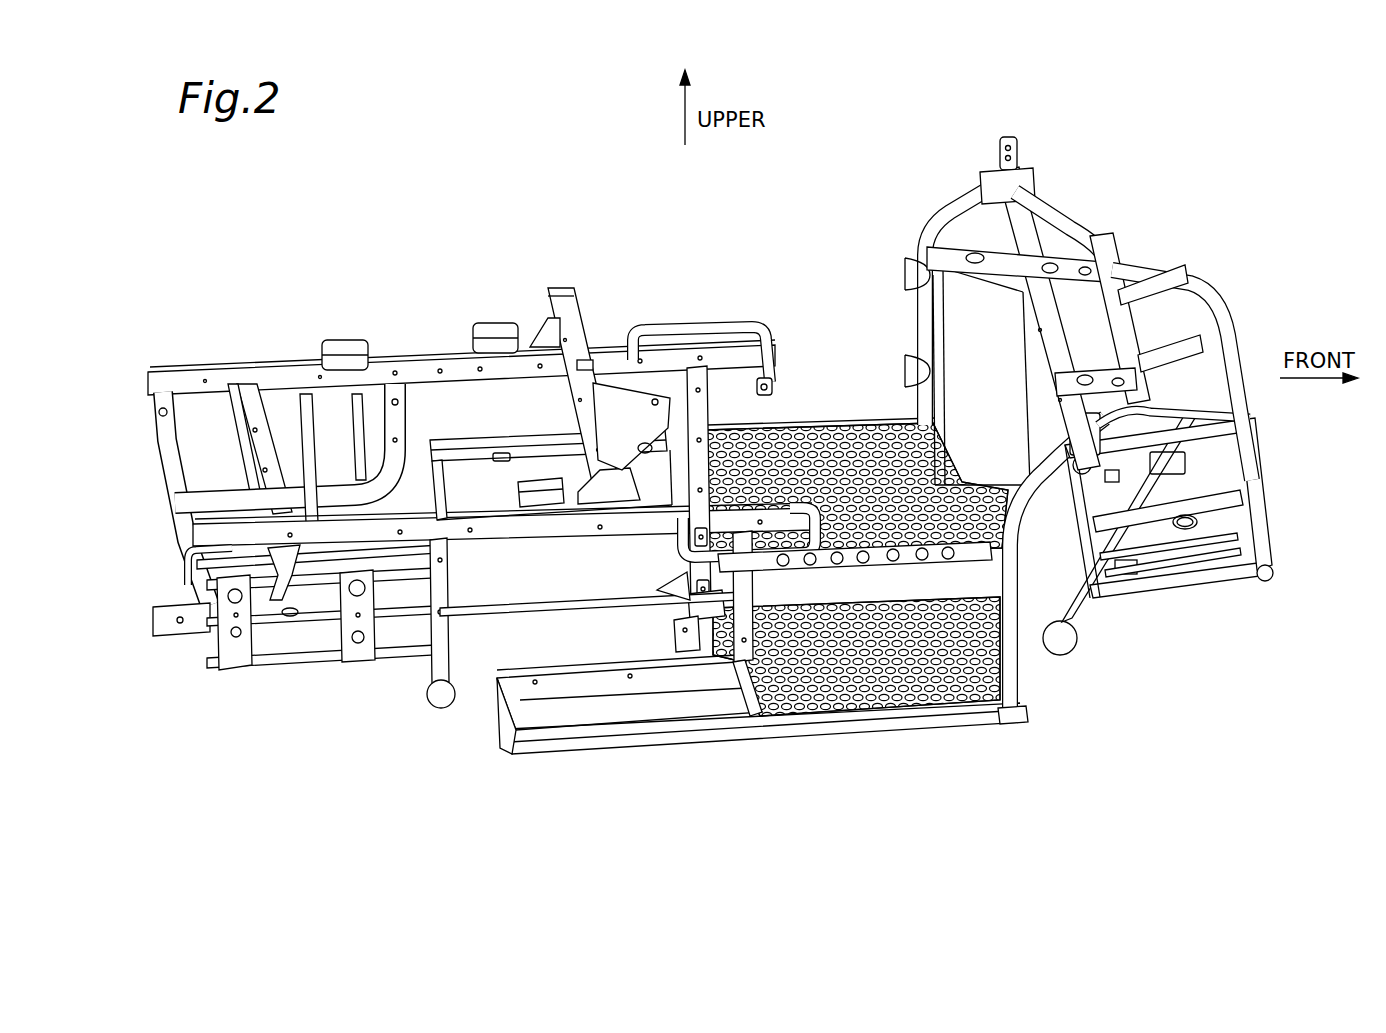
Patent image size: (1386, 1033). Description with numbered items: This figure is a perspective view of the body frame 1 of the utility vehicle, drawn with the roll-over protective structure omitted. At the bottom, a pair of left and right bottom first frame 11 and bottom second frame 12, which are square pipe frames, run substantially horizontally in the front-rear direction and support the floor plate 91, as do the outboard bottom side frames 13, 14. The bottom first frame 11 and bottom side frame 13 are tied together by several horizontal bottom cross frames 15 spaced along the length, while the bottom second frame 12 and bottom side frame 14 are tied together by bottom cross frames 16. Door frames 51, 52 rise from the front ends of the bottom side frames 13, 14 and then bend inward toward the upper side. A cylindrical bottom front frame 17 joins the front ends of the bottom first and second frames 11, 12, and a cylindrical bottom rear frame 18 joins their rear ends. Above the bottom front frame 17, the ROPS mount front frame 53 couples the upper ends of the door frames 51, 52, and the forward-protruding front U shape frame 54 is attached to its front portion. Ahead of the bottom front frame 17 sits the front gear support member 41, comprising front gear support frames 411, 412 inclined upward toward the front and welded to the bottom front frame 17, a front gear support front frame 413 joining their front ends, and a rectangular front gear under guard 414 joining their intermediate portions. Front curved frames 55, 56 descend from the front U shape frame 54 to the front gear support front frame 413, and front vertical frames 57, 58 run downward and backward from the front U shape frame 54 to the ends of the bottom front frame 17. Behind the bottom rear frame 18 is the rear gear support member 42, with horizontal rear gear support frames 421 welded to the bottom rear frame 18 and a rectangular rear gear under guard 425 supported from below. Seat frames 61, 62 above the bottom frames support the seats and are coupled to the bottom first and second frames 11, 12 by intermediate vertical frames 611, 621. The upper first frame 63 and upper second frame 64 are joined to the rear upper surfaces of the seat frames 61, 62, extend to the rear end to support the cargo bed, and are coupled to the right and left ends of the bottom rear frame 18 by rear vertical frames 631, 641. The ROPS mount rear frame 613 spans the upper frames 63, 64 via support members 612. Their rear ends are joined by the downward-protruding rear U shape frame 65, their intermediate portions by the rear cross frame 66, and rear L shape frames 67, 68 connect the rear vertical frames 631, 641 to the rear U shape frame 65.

The body frame 1 is at (1162, 168).
The bottom first frame 11 is at (590, 685).
The bottom second frame 12 is at (663, 397).
The bottom side frame 13 is at (700, 737).
The bottom side frame 14 is at (473, 457).
The bottom cross frame 15 is at (515, 742).
The bottom cross frame 16 is at (430, 437).
The bottom front frame 17 is at (1065, 655).
The bottom rear frame 18 is at (447, 710).
The front gear support member 41 is at (1232, 620).
The front gear support frame 411 is at (1194, 583).
The front gear support frame 412 is at (1122, 577).
The front gear support front frame 413 is at (1265, 592).
The front gear under guard 414 is at (1157, 573).
The rear gear support member 42 is at (262, 690).
The rear gear support frame 421 is at (305, 647).
The rear gear under guard 425 is at (322, 615).
The door frame 51 is at (1018, 668).
The door frame 52 is at (925, 240).
The ROPS mount front frame 53 is at (1015, 205).
The front U shape frame 54 is at (1088, 235).
The front curved frame 55 is at (1253, 418).
The front curved frame 56 is at (1205, 302).
The front vertical frame 57 is at (1098, 605).
The front vertical frame 58 is at (1093, 292).
The seat frame 61 is at (768, 510).
The intermediate vertical frame 611 is at (790, 715).
The support member 612 is at (545, 335).
The ROPS mount rear frame 613 is at (575, 298).
The seat frame 62 is at (698, 345).
The intermediate vertical frame 621 is at (708, 403).
The upper first frame 63 is at (500, 530).
The rear vertical frame 631 is at (428, 660).
The upper second frame 64 is at (408, 372).
The rear vertical frame 641 is at (360, 410).
The rear U shape frame 65 is at (162, 460).
The rear cross frame 66 is at (250, 393).
The rear L shape frame 67 is at (305, 587).
The rear L shape frame 68 is at (327, 500).
The floor plate 91 is at (845, 685).